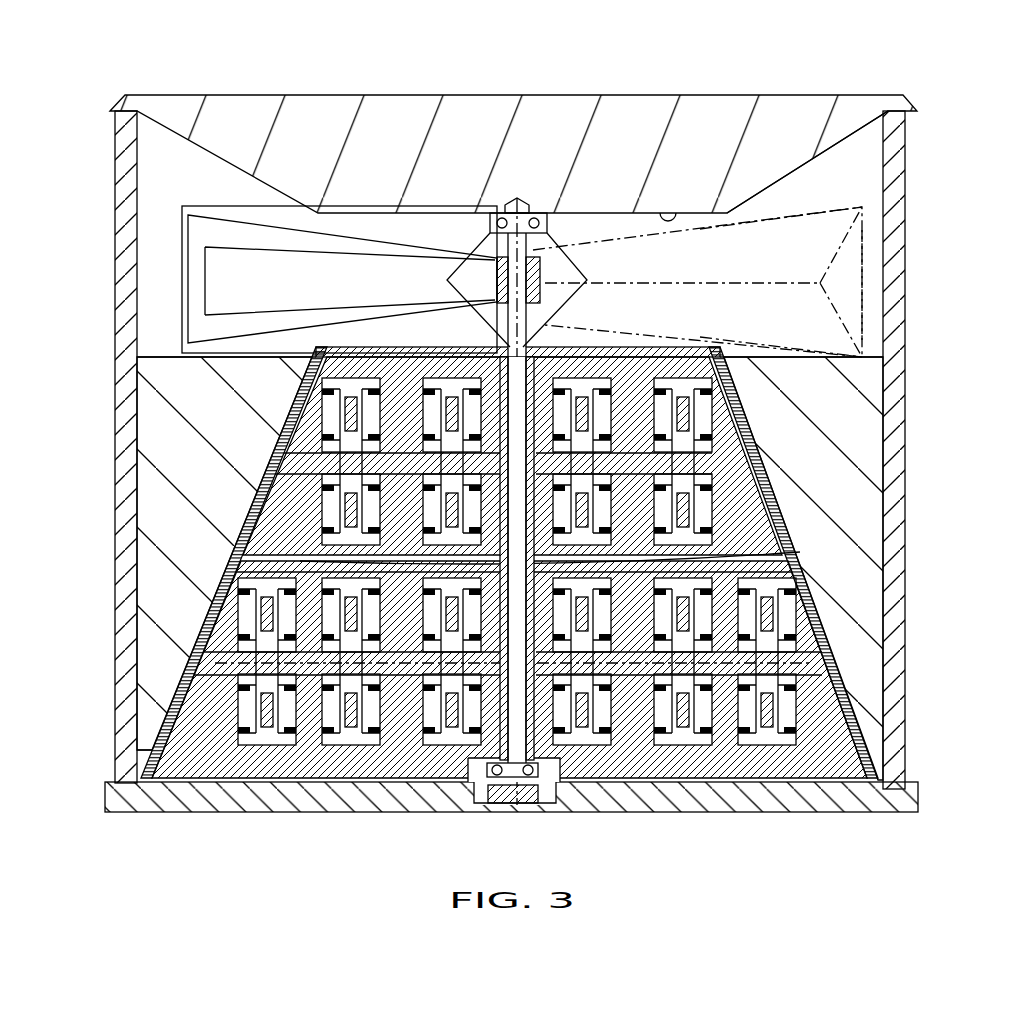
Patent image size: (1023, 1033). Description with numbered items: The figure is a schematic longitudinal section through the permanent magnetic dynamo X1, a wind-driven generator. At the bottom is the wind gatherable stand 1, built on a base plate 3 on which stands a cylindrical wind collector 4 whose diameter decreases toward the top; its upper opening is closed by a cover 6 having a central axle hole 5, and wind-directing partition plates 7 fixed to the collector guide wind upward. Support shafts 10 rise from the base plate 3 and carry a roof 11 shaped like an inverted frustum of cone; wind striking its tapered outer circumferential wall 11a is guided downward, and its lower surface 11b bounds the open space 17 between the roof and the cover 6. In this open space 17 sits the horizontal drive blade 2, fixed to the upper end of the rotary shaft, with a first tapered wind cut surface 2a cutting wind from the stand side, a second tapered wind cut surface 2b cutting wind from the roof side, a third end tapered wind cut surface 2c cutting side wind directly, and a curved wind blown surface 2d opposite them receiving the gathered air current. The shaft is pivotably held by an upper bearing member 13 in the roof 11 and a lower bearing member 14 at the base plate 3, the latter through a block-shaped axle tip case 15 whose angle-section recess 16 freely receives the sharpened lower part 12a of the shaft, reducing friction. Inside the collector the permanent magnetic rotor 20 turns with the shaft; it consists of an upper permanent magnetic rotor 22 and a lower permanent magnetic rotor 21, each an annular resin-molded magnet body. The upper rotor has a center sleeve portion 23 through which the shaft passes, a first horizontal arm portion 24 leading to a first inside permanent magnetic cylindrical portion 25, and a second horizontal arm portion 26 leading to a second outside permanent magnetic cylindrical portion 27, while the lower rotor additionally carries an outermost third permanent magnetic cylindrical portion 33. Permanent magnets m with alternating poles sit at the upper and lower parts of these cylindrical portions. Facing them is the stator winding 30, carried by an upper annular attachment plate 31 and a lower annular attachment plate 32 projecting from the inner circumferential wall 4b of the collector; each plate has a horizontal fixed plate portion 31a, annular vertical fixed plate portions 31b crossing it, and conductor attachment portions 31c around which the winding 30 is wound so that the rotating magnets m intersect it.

The wind gatherable stand 1 is at (848, 408).
The horizontal drive blade 2 is at (885, 249).
The first tapered wind cut surface 2a is at (796, 352).
The second tapered wind cut surface 2b is at (787, 232).
The third end tapered wind cut surface 2c is at (866, 303).
The wind blown surface 2d is at (228, 247).
The base plate 3 is at (915, 794).
The cylindrical wind collector 4 is at (885, 542).
The inner circumferential wall 4b is at (232, 690).
The axle hole 5 is at (524, 345).
The cover 6 is at (368, 348).
The wind-directing partition plate 7 is at (140, 573).
The support shaft 10 is at (130, 438).
The roof 11 is at (838, 96).
The tapered outer circumferential wall 11a is at (848, 136).
The lower surface 11b is at (678, 214).
The sharpened lower part 12a is at (490, 800).
The upper bearing member 13 is at (546, 226).
The lower bearing member 14 is at (545, 800).
The axle tip case 15 is at (500, 788).
The opposite angle section-shaped recess 16 is at (528, 788).
The open space 17 is at (616, 231).
The permanent magnetic rotor 20 is at (705, 467).
The lower permanent magnetic rotor 21 is at (836, 642).
The upper permanent magnetic rotor 22 is at (703, 366).
The center sleeve portion 23 is at (330, 560).
The first horizontal arm portion 24 is at (417, 466).
The first inside permanent magnetic cylindrical portion 25 is at (457, 357).
The second horizontal arm portion 26 is at (640, 378).
The second outside permanent magnetic cylindrical portion 27 is at (682, 398).
The stator winding 30 is at (312, 490).
The upper annular attachment plate 31 is at (720, 395).
The horizontal fixed plate portion 31a is at (560, 357).
The annular vertical fixed plate portion 31b is at (412, 357).
The conductor attachment portion 31c is at (300, 418).
The lower annular attachment plate 32 is at (845, 668).
The third permanent magnetic cylindrical portion 33 is at (755, 748).
The permanent magnet m is at (350, 410).
The permanent magnetic dynamo X1 is at (936, 127).